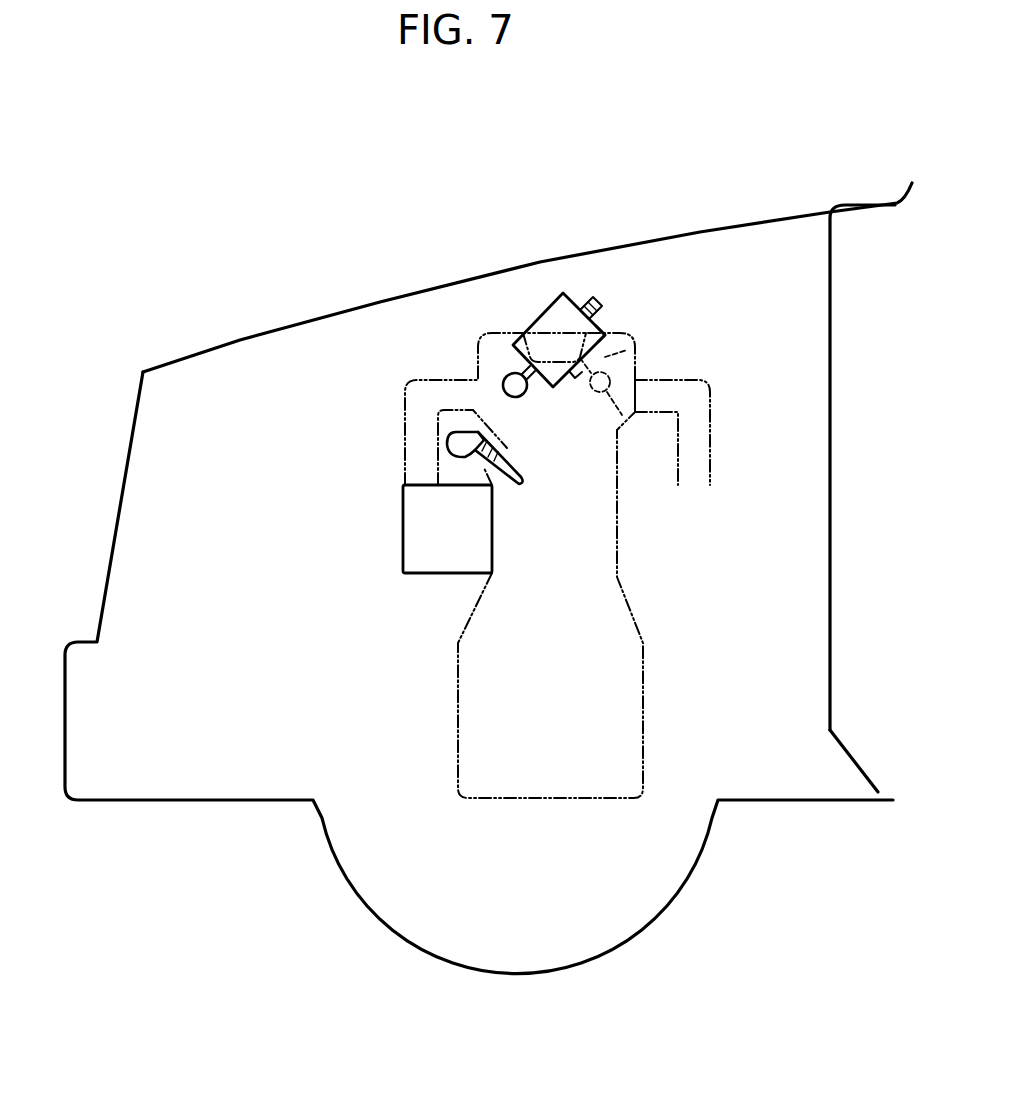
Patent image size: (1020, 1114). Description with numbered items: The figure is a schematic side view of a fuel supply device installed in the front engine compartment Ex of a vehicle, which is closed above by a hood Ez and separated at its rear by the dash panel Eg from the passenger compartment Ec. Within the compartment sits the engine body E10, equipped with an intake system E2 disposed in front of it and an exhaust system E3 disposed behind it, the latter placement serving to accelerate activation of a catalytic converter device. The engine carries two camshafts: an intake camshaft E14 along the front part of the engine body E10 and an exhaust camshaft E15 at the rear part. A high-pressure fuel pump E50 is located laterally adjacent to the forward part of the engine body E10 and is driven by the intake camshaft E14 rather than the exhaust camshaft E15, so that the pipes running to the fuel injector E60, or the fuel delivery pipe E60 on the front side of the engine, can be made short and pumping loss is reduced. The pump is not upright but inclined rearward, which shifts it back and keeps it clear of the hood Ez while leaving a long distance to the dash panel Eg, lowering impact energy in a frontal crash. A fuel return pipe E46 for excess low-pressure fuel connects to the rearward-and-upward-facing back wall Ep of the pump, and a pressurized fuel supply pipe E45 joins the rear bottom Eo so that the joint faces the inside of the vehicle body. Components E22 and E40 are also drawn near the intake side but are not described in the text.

The hood of engine compartment Ez is at (383, 298).
The engine compartment Ex is at (292, 622).
The dash panel Eg is at (827, 521).
The passenger compartment Ec is at (870, 637).
The intake system E2 is at (404, 404).
The exhaust system E3 is at (713, 422).
The exhaust camshaft E15 is at (626, 424).
The engine body E10 is at (632, 620).
The box unit E22 is at (403, 507).
The device body E40 is at (453, 445).
The fuel injector or fuel delivery pipe E60 is at (521, 480).
The intake camshaft E14 is at (505, 383).
The high-pressure fuel pump E50 is at (540, 307).
The fuel return pipe E46 is at (605, 298).
The back wall Ep is at (602, 328).
The pressurized fuel supply pipe E45 is at (632, 352).
The rear bottom Eo is at (575, 377).